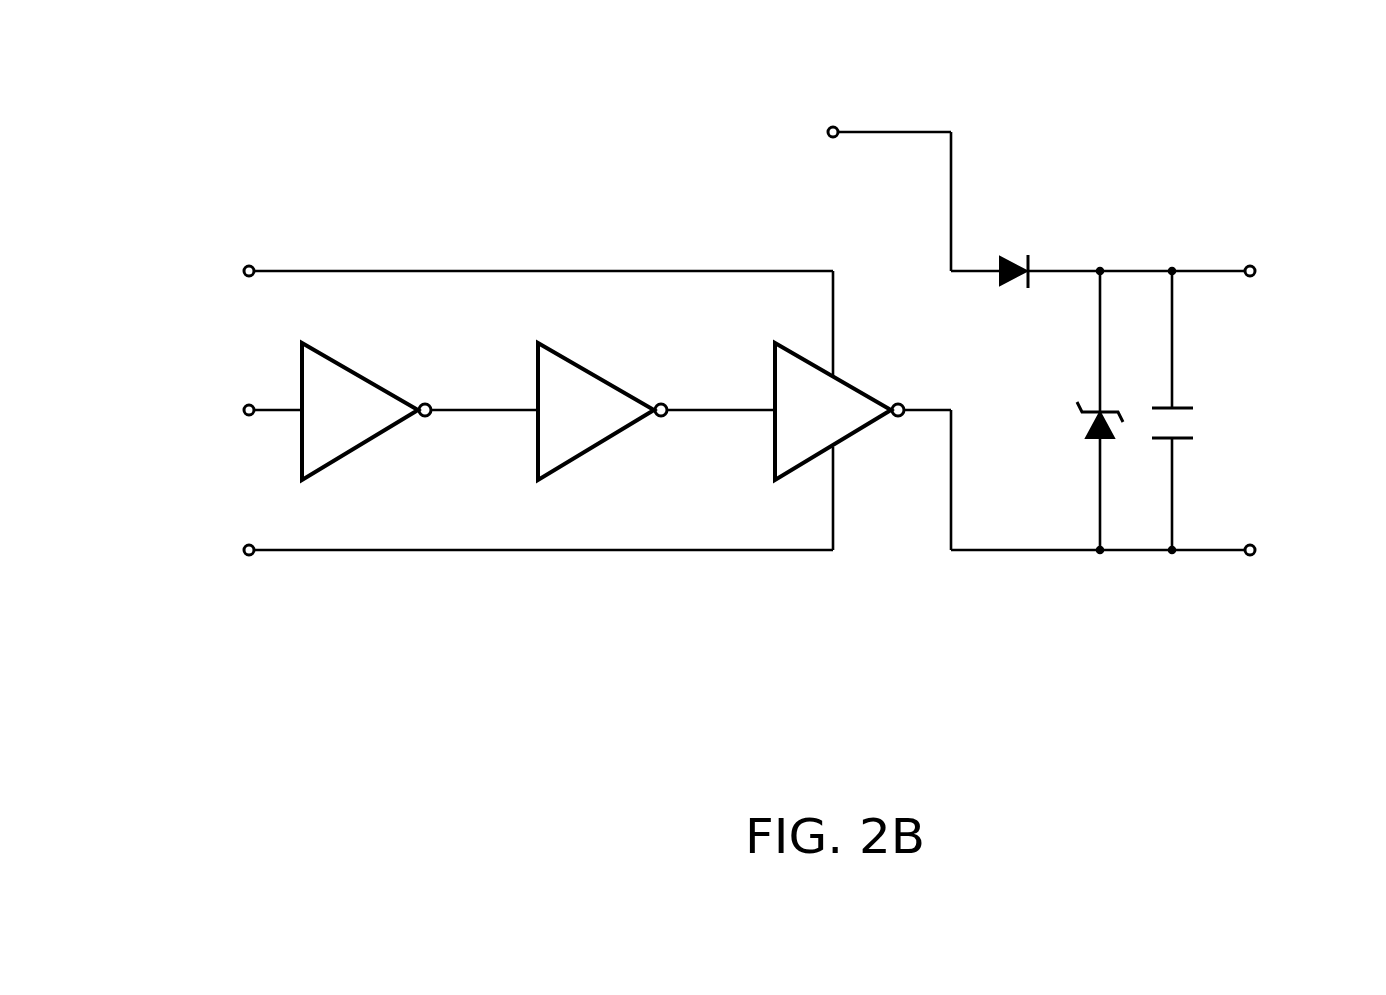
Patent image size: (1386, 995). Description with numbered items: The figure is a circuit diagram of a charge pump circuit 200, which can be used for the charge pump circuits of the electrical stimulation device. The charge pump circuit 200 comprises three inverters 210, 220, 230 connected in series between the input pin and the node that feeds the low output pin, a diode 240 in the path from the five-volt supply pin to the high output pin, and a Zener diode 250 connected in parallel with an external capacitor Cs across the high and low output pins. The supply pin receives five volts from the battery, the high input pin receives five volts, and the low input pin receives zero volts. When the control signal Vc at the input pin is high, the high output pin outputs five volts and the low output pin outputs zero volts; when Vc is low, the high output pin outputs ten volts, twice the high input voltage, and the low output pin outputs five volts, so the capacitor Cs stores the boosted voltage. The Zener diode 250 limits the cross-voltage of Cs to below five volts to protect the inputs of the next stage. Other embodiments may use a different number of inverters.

The charge pump circuit 200 is at (256, 73).
The inverter 210 is at (393, 392).
The inverter 220 is at (629, 392).
The inverter 230 is at (863, 392).
The diode 240 is at (1012, 262).
The Zener diode 250 is at (1091, 440).